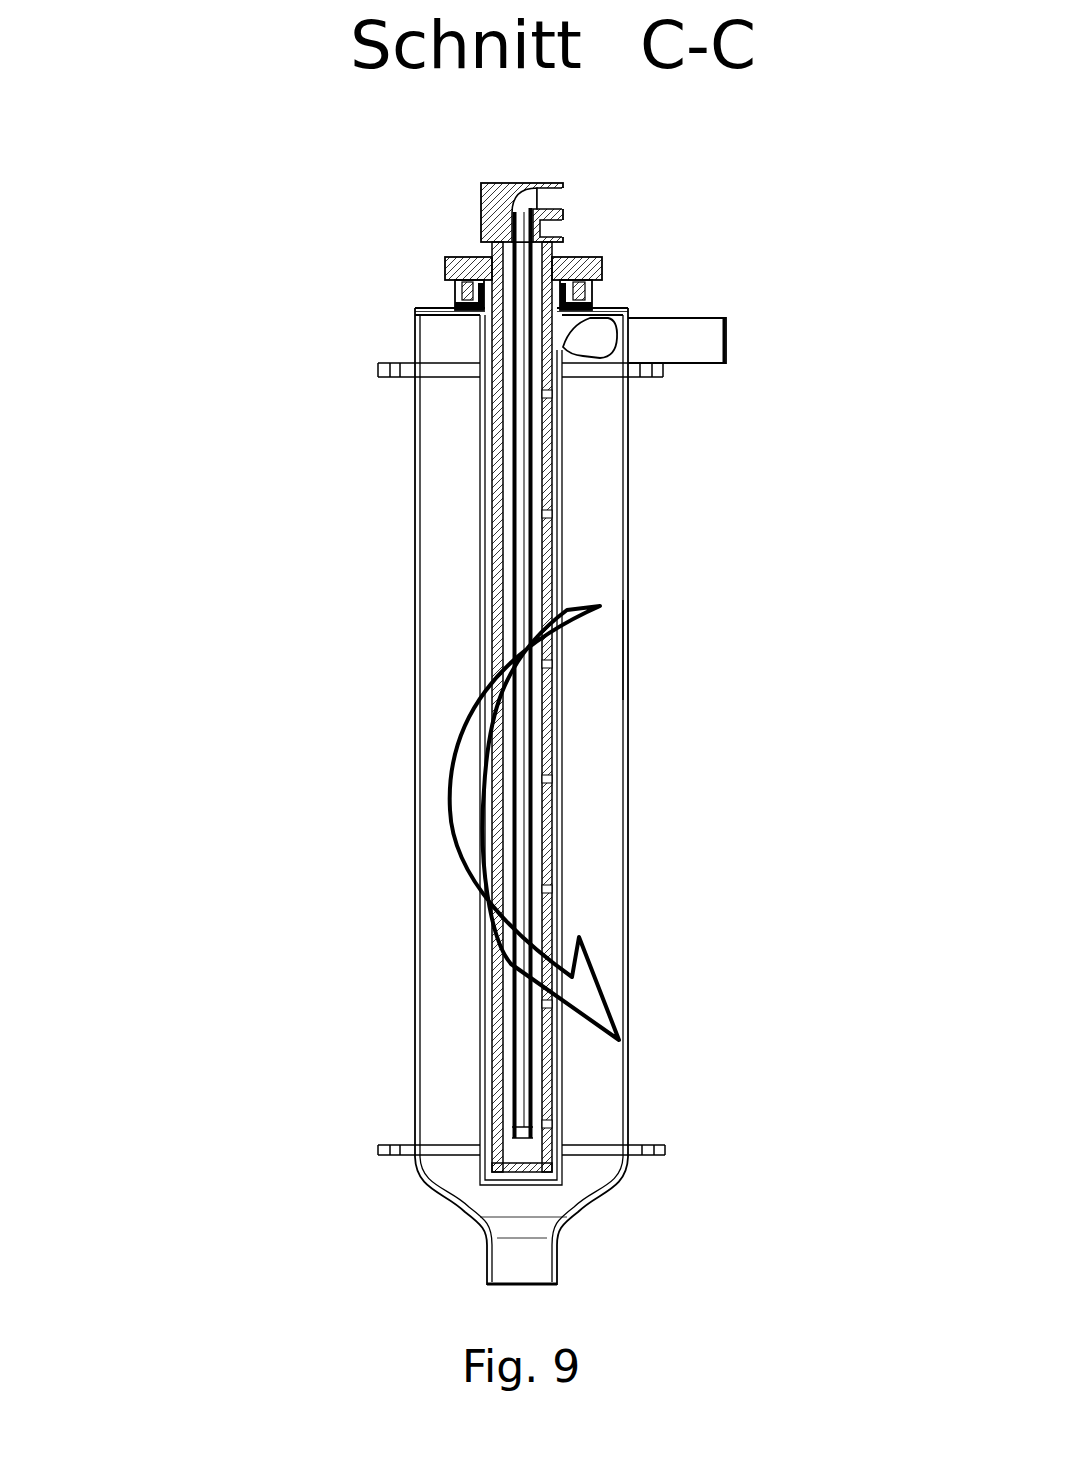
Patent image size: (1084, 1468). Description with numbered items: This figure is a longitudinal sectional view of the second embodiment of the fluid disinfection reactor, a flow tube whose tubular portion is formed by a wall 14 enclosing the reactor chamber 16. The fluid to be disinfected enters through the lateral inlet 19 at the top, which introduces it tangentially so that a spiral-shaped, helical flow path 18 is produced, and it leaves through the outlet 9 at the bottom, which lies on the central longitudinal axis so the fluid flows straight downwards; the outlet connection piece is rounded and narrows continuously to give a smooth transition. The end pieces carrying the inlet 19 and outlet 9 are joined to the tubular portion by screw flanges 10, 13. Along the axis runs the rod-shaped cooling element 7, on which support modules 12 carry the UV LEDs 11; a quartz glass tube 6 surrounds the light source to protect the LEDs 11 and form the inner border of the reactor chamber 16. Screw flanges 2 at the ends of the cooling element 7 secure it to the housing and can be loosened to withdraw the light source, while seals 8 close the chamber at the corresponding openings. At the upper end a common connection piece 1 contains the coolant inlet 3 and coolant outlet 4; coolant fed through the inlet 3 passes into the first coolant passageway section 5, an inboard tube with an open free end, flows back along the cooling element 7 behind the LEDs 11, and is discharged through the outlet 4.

The connection piece 1 is at (492, 193).
The screw flange 2 is at (447, 258).
The coolant inlet 3 is at (540, 195).
The coolant outlet 4 is at (547, 227).
The first coolant passageway section 5 is at (518, 246).
The quartz glass tube 6 is at (465, 275).
The cooling element 7 is at (500, 318).
The seal 8 is at (460, 292).
The outlet 9 is at (523, 1267).
The screw flange 10 is at (652, 358).
The UV LED 11 is at (552, 403).
The support module 12 is at (545, 465).
The screw flange 13 is at (648, 1153).
The wall 14 is at (407, 585).
The reactor chamber 16 is at (587, 667).
The flow path 18 is at (455, 830).
The inlet 19 is at (658, 327).